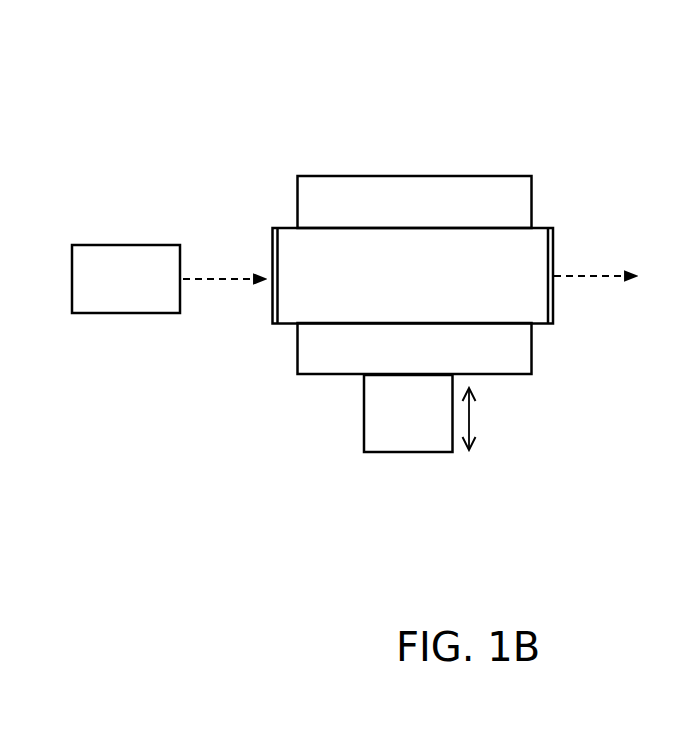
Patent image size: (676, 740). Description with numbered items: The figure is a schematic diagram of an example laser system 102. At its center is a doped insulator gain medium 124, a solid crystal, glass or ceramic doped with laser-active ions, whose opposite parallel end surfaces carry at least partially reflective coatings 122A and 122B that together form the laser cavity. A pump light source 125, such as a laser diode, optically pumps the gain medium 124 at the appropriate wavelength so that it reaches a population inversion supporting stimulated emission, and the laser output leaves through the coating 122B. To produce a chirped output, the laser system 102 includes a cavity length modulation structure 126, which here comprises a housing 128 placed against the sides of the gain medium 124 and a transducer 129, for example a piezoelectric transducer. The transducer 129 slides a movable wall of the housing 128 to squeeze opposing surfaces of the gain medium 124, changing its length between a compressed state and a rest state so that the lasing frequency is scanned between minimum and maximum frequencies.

The laser system 102 is at (563, 80).
The at least partially reflective coating 122A is at (272, 244).
The at least partially reflective coating 122B is at (554, 242).
The doped insulator gain medium 124 is at (413, 276).
The pump light source 125 is at (126, 279).
The cavity length modulation structure 126 is at (330, 410).
The housing 128 is at (415, 275).
The transducer 129 is at (416, 413).